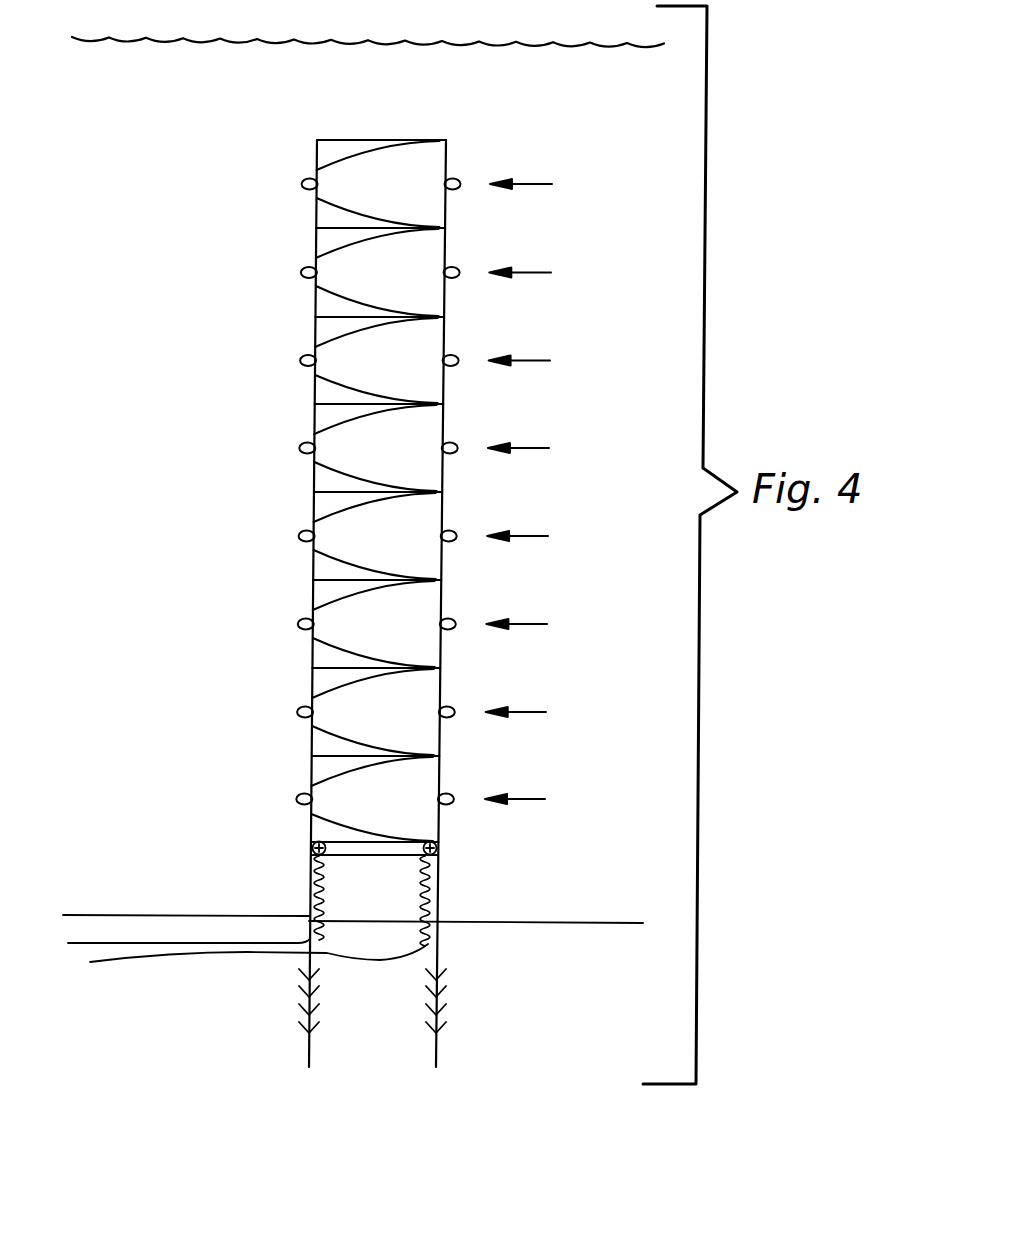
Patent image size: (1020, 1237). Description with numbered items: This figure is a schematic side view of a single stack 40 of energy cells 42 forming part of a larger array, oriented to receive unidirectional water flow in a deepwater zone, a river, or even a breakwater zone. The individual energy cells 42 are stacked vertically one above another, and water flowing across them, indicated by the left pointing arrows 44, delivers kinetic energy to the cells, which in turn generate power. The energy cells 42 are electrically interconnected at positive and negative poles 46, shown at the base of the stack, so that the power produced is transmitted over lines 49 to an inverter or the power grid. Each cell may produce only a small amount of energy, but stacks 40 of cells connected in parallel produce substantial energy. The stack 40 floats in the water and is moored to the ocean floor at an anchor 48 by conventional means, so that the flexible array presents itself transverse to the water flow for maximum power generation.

The stack 40 is at (238, 485).
The energy cells 42 is at (452, 163).
The left pointing arrows 44 is at (580, 270).
The positive and negative poles 46 is at (447, 857).
The anchor 48 is at (450, 1002).
The lines 49 is at (102, 977).